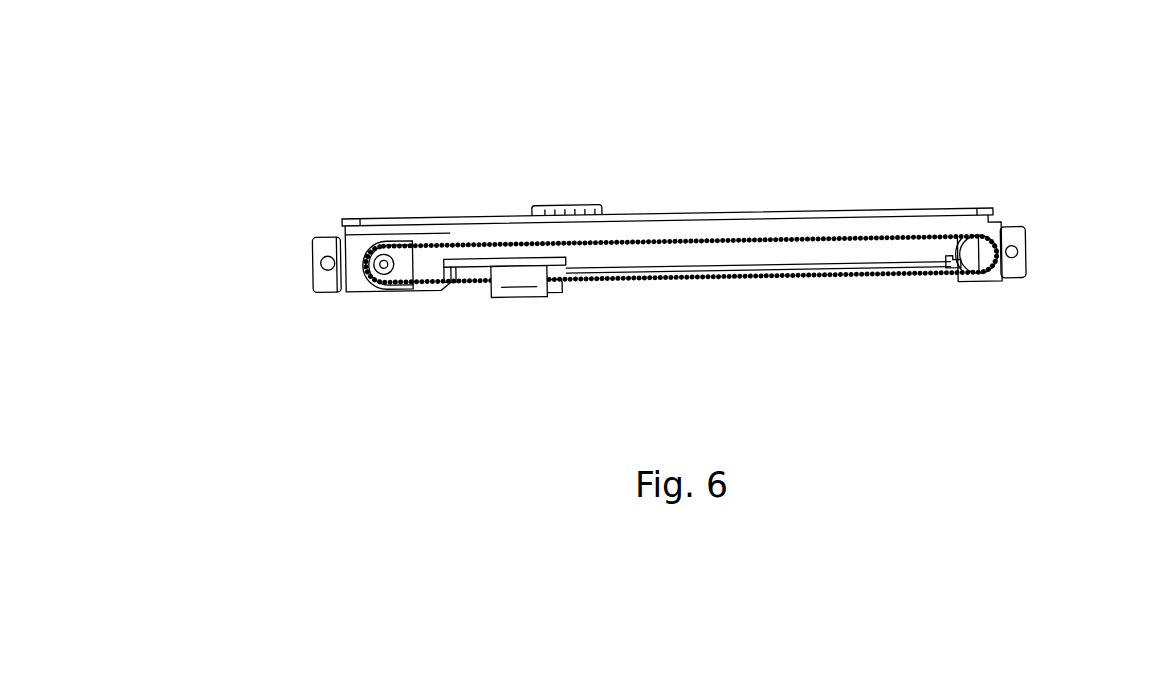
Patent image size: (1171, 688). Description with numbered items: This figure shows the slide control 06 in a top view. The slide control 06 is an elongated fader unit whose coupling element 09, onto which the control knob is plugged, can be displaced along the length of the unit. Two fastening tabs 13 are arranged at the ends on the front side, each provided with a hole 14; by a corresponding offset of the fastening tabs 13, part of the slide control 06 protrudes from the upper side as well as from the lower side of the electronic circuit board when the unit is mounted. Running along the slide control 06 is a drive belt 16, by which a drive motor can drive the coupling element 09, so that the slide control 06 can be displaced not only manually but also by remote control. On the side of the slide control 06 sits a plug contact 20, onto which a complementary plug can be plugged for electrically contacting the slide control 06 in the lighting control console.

The slide control 06 is at (913, 100).
The coupling element 09 is at (518, 274).
The fastening tab 13 is at (325, 243).
The hole 14 is at (321, 268).
The drive belt 16 is at (830, 274).
The plug contact 20 is at (590, 204).